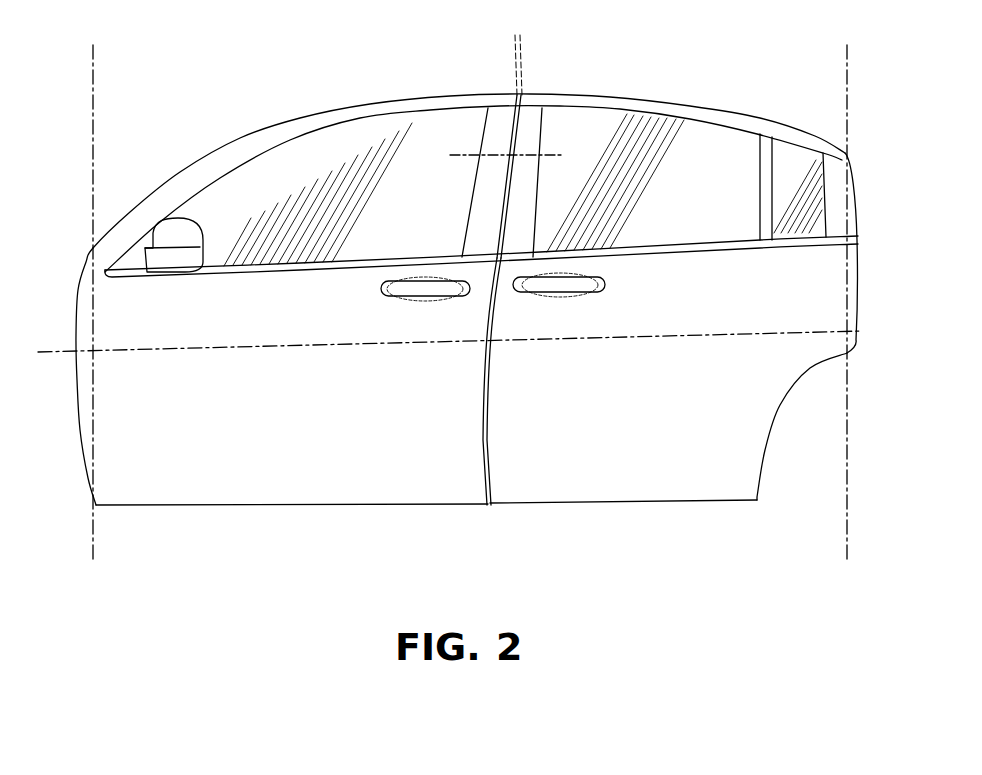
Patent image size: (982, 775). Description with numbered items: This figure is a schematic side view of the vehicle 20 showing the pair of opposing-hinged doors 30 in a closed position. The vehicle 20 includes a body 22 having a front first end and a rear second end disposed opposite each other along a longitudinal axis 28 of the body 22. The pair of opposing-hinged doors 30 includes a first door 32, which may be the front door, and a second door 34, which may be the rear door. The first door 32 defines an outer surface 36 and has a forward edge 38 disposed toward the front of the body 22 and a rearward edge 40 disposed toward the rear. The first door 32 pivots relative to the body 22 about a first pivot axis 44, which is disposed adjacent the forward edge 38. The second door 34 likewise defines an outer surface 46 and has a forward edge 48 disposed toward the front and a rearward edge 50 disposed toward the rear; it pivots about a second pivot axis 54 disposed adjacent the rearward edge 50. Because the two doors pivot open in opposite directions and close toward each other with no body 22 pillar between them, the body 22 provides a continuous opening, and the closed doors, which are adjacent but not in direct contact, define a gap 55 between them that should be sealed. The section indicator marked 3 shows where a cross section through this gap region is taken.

The vehicle 20 is at (719, 62).
The body 22 is at (748, 112).
The longitudinal axis 28 is at (863, 329).
The pair of opposing-hinged doors 30 is at (575, 515).
The first door 32 is at (201, 503).
The second door 34 is at (737, 502).
The outer surface 36 is at (251, 424).
The forward edge 38 is at (80, 412).
The rearward edge 40 is at (491, 456).
The first pivot axis 44 is at (93, 72).
The outer surface 46 is at (619, 404).
The forward edge 48 is at (480, 382).
The rearward edge 50 is at (856, 340).
The second pivot axis 54 is at (848, 80).
The gap 55 is at (470, 55).
The section line 3- 3 is at (562, 172).